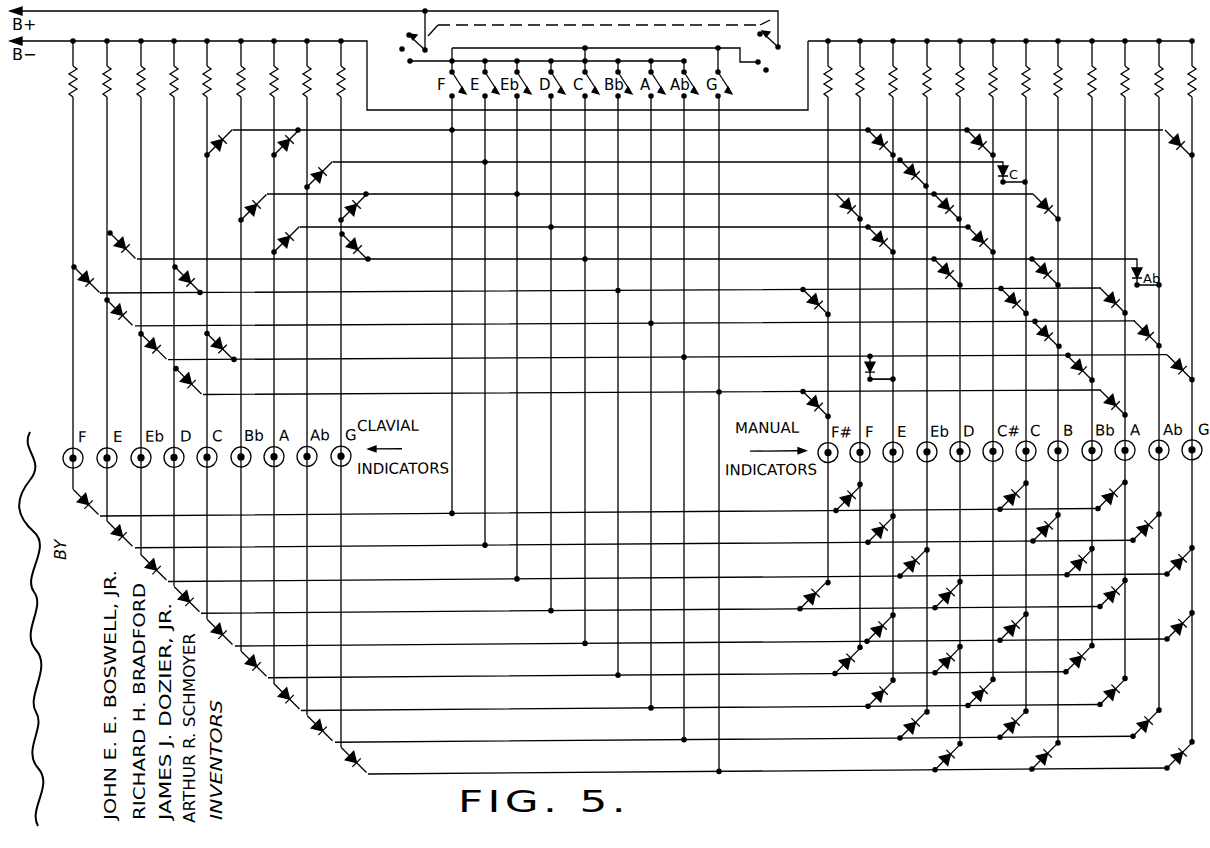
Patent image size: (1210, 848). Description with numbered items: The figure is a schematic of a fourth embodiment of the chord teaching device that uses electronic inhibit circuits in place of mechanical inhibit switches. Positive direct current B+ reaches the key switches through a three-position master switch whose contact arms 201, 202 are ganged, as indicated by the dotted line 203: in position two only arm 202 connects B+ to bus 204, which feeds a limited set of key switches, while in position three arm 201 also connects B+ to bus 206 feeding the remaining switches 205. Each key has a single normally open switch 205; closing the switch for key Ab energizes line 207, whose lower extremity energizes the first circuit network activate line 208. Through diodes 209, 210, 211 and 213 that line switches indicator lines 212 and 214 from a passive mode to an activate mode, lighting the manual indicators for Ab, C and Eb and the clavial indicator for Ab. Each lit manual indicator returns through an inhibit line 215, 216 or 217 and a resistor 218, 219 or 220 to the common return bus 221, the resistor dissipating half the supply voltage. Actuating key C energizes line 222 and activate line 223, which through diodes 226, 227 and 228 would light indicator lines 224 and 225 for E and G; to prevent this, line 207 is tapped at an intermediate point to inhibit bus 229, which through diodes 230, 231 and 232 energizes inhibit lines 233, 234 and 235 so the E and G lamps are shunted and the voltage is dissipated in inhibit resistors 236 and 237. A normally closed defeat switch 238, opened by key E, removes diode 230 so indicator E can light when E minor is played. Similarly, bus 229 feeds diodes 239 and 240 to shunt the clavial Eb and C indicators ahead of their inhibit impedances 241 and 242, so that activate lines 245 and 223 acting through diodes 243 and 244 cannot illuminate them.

The contact arm 201 is at (418, 32).
The contact arm 202 is at (778, 47).
The dotted line 203 is at (790, 23).
The bus 204 is at (550, 48).
The switch 205 is at (432, 97).
The bus 206 is at (413, 66).
The line 207 is at (683, 435).
The activate line 208 is at (616, 740).
The diode 209 is at (906, 732).
The diode 210 is at (1010, 732).
The diode 211 is at (1130, 724).
The indicator line 212 is at (1156, 494).
The diode 213 is at (337, 728).
The indicator line 214 is at (310, 508).
The inhibit line 215 is at (926, 422).
The inhibit line 216 is at (1025, 418).
The inhibit line 217 is at (1122, 417).
The resistor 218 is at (930, 93).
The resistor 219 is at (1029, 93).
The resistor 220 is at (1162, 93).
The common return bus 221 is at (974, 38).
The line 222 is at (584, 435).
The activate line 223 is at (540, 646).
The indicator line 224 is at (892, 495).
The indicator line 225 is at (1190, 504).
The diode 226 is at (868, 633).
The diode 227 is at (1014, 626).
The diode 228 is at (1188, 628).
The inhibit bus 229 is at (776, 358).
The diode 230 is at (863, 367).
The diode 231 is at (1090, 362).
The diode 232 is at (1174, 376).
The inhibit line 233 is at (892, 423).
The inhibit line 234 is at (1112, 396).
The inhibit line 235 is at (1188, 384).
The inhibit resistor 236 is at (895, 72).
The inhibit resistor 237 is at (1200, 74).
The defeat switch 238 is at (884, 388).
The diode 239 is at (164, 347).
The diode 240 is at (229, 346).
The inhibit impedance 241 is at (145, 93).
The inhibit impedance 242 is at (211, 93).
The diode 243 is at (164, 572).
The diode 244 is at (231, 640).
The activate line 245 is at (450, 580).